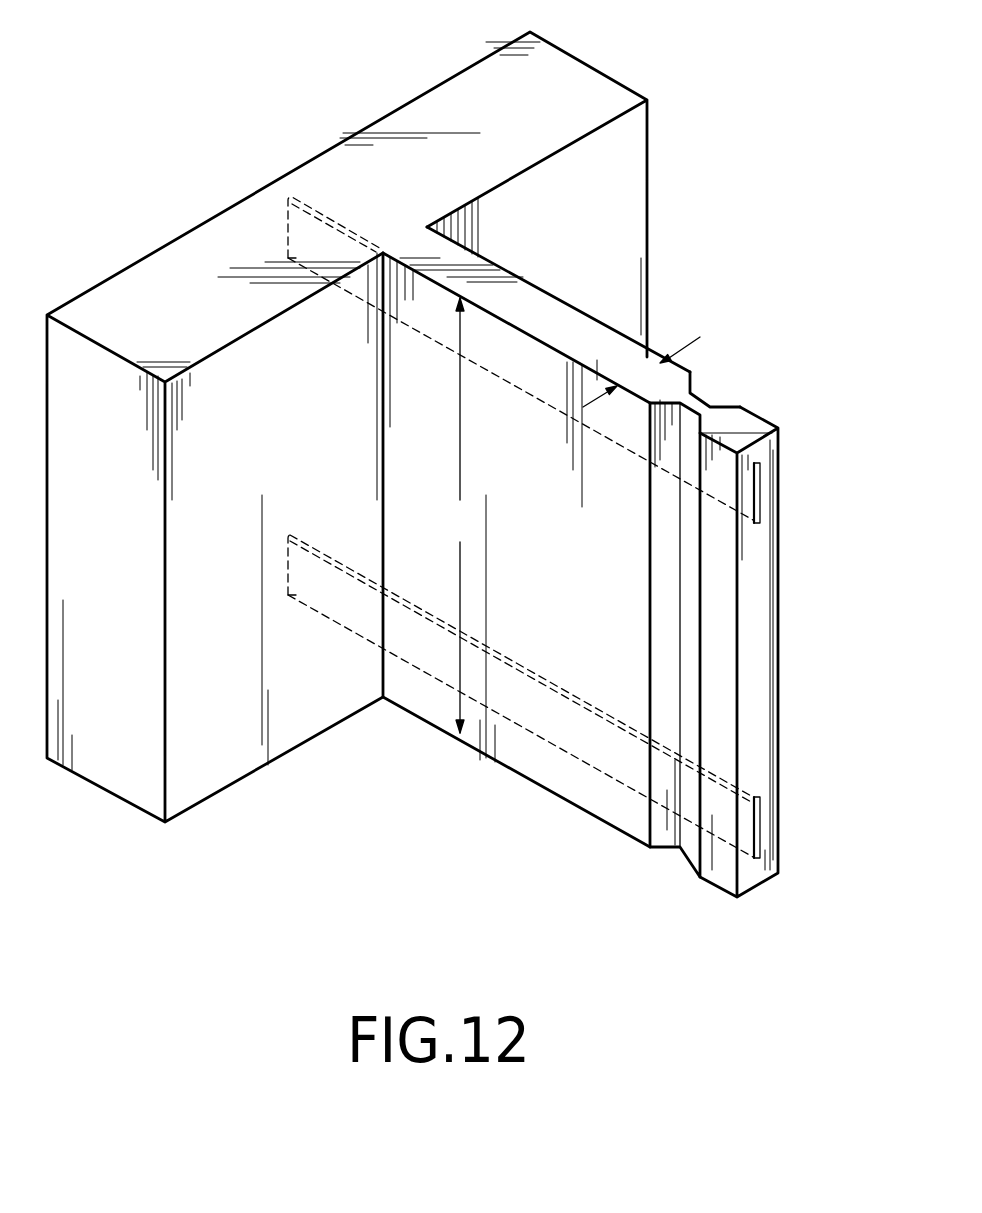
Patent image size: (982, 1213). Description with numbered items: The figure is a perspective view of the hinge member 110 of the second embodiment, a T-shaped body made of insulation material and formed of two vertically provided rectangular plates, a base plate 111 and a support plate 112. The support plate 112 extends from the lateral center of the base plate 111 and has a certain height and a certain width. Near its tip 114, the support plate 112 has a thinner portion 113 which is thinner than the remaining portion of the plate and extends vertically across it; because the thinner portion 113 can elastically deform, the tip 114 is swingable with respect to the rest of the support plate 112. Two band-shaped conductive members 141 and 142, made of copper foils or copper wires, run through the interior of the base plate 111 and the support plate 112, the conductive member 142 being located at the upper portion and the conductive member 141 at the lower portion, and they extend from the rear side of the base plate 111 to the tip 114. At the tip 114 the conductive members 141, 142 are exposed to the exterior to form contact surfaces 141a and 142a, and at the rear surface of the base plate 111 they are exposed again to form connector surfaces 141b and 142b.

The hinge member 110 is at (358, 73).
The base plate 111 is at (157, 268).
The support plate 112 is at (562, 311).
The thinner portion 113 is at (693, 640).
The tip 114 is at (758, 604).
The conductive member 141 is at (560, 750).
The contact surface 141a is at (762, 837).
The connector surface 141b is at (289, 548).
The conductive member 142 is at (545, 403).
The contact surface 142a is at (760, 498).
The connector surface 142b is at (288, 226).